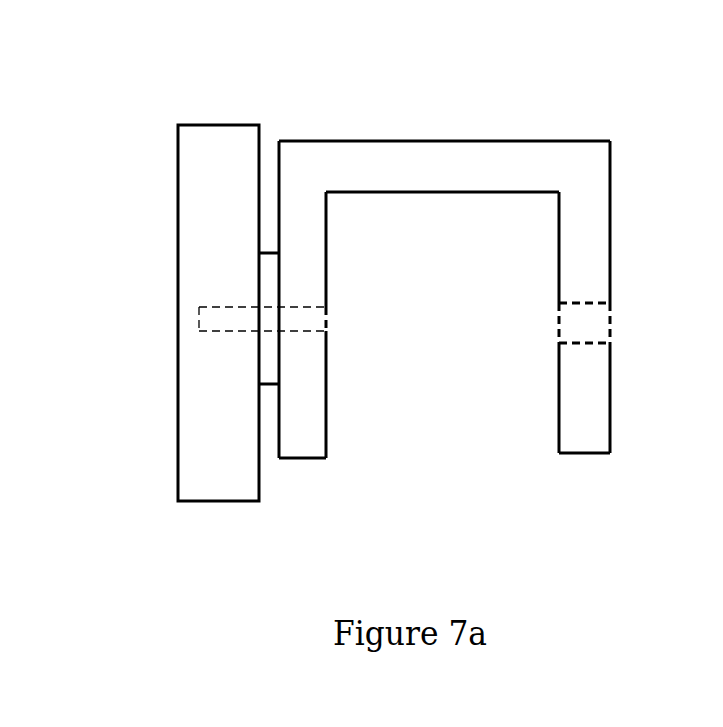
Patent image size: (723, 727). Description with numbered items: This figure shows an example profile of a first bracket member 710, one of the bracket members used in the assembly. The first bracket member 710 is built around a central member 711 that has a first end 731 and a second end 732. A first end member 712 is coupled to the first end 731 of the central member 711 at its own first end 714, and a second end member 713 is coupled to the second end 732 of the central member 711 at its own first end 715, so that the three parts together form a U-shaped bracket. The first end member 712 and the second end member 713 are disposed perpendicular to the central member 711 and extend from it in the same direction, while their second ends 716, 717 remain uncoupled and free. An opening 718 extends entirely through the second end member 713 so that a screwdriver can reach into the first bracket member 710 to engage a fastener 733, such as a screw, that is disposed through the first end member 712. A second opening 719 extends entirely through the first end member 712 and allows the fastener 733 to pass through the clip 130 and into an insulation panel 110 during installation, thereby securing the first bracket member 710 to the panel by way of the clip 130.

The insulation panel 110 is at (179, 513).
The clip 130 is at (268, 377).
The first bracket member 710 is at (150, 72).
The central member 711 is at (445, 140).
The first end member 712 is at (327, 243).
The second end member 713 is at (610, 224).
The first end of first end member 714 is at (278, 140).
The first end of second end member 715 is at (610, 141).
The second end of first end member 716 is at (303, 460).
The second end of second end member 717 is at (585, 455).
The opening 718 is at (602, 345).
The second opening 719 is at (320, 332).
The first end of central member 731 is at (279, 141).
The second end of central member 732 is at (609, 141).
The fastener 733 is at (333, 318).